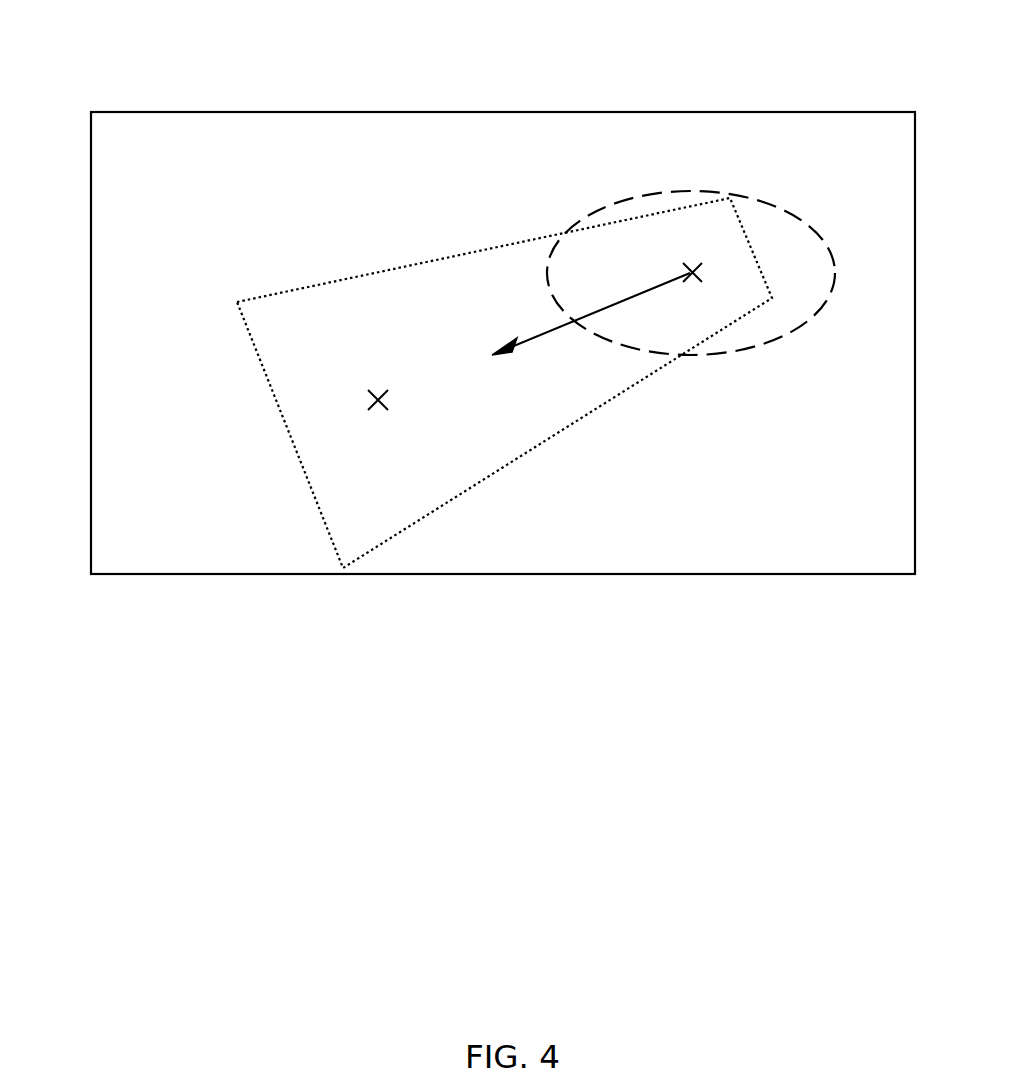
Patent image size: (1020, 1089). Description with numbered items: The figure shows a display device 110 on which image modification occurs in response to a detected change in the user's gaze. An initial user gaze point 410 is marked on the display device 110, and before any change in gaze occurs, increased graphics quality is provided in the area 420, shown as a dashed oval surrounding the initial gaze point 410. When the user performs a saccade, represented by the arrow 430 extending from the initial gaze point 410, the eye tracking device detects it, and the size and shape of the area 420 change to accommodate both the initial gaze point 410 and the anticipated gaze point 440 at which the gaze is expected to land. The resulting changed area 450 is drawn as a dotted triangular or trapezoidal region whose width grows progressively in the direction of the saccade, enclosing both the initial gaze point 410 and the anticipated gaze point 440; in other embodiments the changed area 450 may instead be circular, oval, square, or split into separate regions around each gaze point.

The display device 110 is at (162, 112).
The initial user gaze point 410 is at (692, 272).
The area 420 is at (747, 197).
The arrow 430 is at (517, 342).
The anticipated gaze point 440 is at (378, 406).
The changed area 450 is at (345, 275).